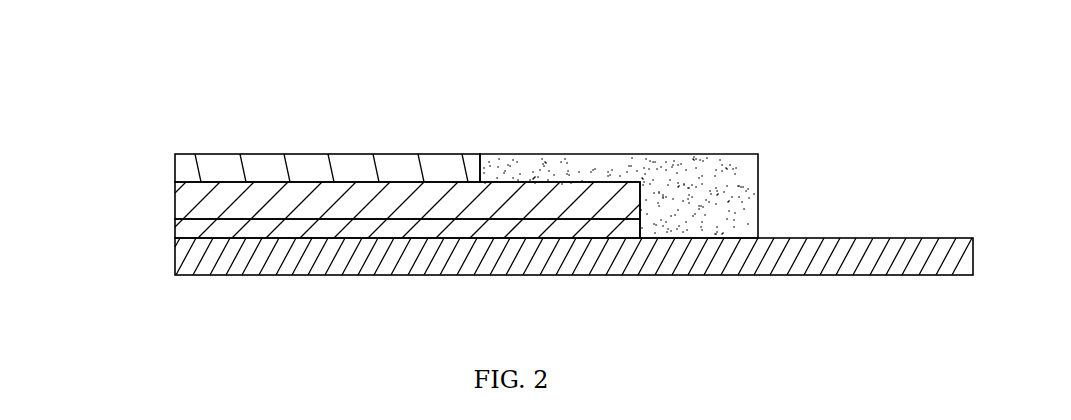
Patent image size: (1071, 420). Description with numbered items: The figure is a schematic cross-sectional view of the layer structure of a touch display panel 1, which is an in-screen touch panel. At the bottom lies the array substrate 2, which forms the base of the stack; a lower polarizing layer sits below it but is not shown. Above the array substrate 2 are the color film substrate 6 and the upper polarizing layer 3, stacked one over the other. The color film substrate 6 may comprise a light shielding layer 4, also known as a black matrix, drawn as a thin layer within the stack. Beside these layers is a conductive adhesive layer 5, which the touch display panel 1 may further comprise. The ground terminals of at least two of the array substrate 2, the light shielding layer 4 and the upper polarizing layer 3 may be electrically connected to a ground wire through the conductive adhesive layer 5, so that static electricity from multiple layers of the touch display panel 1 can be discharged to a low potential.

The touch display panel 1 is at (782, 197).
The array substrate 2 is at (182, 262).
The upper polarizing layer 3 is at (208, 167).
The light shielding layer 4 is at (258, 228).
The conductive adhesive layer 5 is at (575, 163).
The color film substrate 6 is at (208, 187).